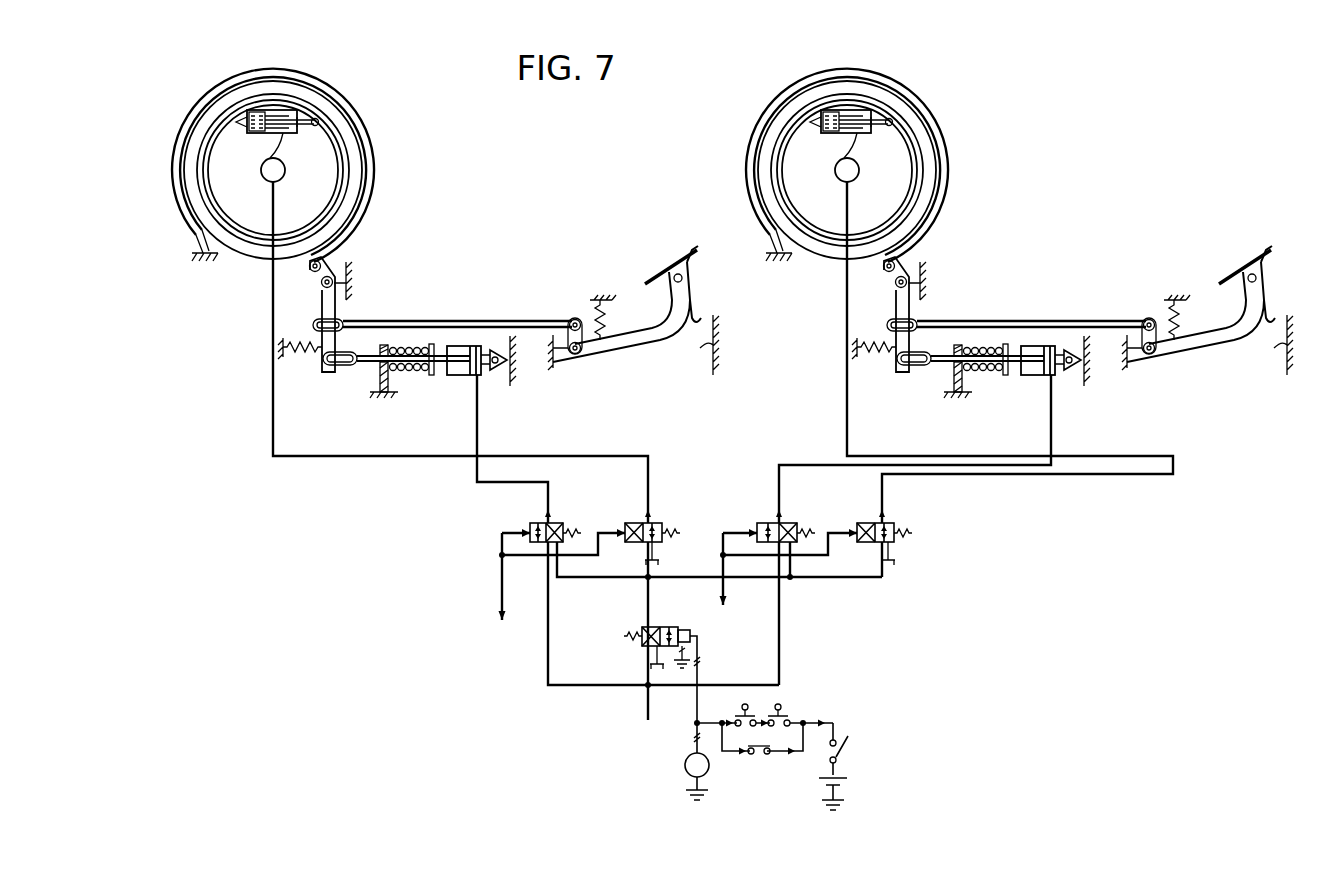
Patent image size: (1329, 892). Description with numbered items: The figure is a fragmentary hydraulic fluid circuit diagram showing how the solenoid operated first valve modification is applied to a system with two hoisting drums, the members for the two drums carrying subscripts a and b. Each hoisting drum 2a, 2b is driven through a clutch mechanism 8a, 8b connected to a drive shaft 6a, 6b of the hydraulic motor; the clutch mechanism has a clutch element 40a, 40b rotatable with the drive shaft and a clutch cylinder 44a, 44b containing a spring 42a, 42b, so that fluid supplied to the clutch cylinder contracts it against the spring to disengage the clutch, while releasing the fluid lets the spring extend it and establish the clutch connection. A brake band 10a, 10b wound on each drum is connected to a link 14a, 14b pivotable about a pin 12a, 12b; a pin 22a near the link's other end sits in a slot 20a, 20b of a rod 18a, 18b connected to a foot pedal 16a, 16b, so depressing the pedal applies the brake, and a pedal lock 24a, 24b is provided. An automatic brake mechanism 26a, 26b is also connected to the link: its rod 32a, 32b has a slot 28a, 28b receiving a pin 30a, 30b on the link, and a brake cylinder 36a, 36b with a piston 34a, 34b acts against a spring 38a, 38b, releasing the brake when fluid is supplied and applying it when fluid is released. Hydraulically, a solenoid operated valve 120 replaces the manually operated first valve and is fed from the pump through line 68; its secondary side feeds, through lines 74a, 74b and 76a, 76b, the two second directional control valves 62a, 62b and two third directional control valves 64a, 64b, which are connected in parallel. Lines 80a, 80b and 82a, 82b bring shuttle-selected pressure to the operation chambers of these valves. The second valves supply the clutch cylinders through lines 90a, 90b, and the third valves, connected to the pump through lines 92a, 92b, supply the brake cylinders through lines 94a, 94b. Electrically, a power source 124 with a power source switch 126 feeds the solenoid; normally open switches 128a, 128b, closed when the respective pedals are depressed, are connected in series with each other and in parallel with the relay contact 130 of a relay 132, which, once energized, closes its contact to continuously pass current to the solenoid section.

The hoisting drum 2a is at (332, 98).
The hoisting drum 2b is at (853, 160).
The drive shaft 6a is at (268, 184).
The drive shaft 6b is at (831, 173).
The clutch mechanism 8a is at (298, 112).
The clutch mechanism 8b is at (859, 98).
The brake band 10a is at (374, 188).
The brake band 10b is at (875, 165).
The pin 12a is at (330, 268).
The pin 12b is at (923, 268).
The link 14a is at (322, 292).
The link 14b is at (876, 314).
The foot pedal 16a is at (646, 331).
The foot pedal 16b is at (1207, 318).
The rod 18a is at (415, 320).
The rod 18b is at (1031, 306).
The slot 20a is at (345, 322).
The slot 20b is at (930, 311).
The pin 22a is at (314, 325).
The pedal lock 24a is at (697, 300).
The pedal lock 24b is at (1270, 273).
The automatic brake mechanism 26a is at (385, 384).
The automatic brake mechanism 26b is at (958, 395).
The slot 28a is at (333, 366).
The slot 28b is at (892, 381).
The pin 30a is at (322, 359).
The pin 30b is at (838, 378).
The rod 32a is at (372, 364).
The rod 32b is at (970, 397).
The piston 34a is at (478, 346).
The piston 34b is at (1055, 333).
The brake cylinder 36a is at (460, 376).
The brake cylinder 36b is at (1045, 392).
The spring 38a is at (408, 371).
The spring 38b is at (986, 375).
The clutch element 40a is at (345, 135).
The clutch element 40b is at (880, 165).
The spring 42a is at (255, 110).
The spring 42b is at (789, 87).
The clutch cylinder 44a is at (282, 112).
The clutch cylinder 44b is at (848, 84).
The second directional control valve 62a is at (653, 528).
The second directional control valve 62b is at (885, 528).
The third directional control valve 64a is at (549, 528).
The third directional control valve 64b is at (781, 529).
The line 68 is at (648, 664).
The line 74a is at (647, 576).
The line 74b is at (882, 577).
The line 76a is at (561, 580).
The line 76b is at (791, 578).
The line 80a is at (522, 556).
The line 80b is at (757, 556).
The line 82a is at (502, 546).
The line 82b is at (723, 545).
The line 90a is at (545, 456).
The line 90b is at (1112, 472).
The line 92a is at (548, 672).
The line 92b is at (779, 642).
The line 94a is at (478, 432).
The line 94b is at (1051, 432).
The solenoid operated valve 120 is at (664, 628).
The power source 124 is at (845, 783).
The power source switch 126 is at (844, 754).
The normally open switch 128a is at (731, 718).
The normally open switch 128b is at (789, 718).
The relay contact 130 is at (757, 755).
The relay 132 is at (685, 766).